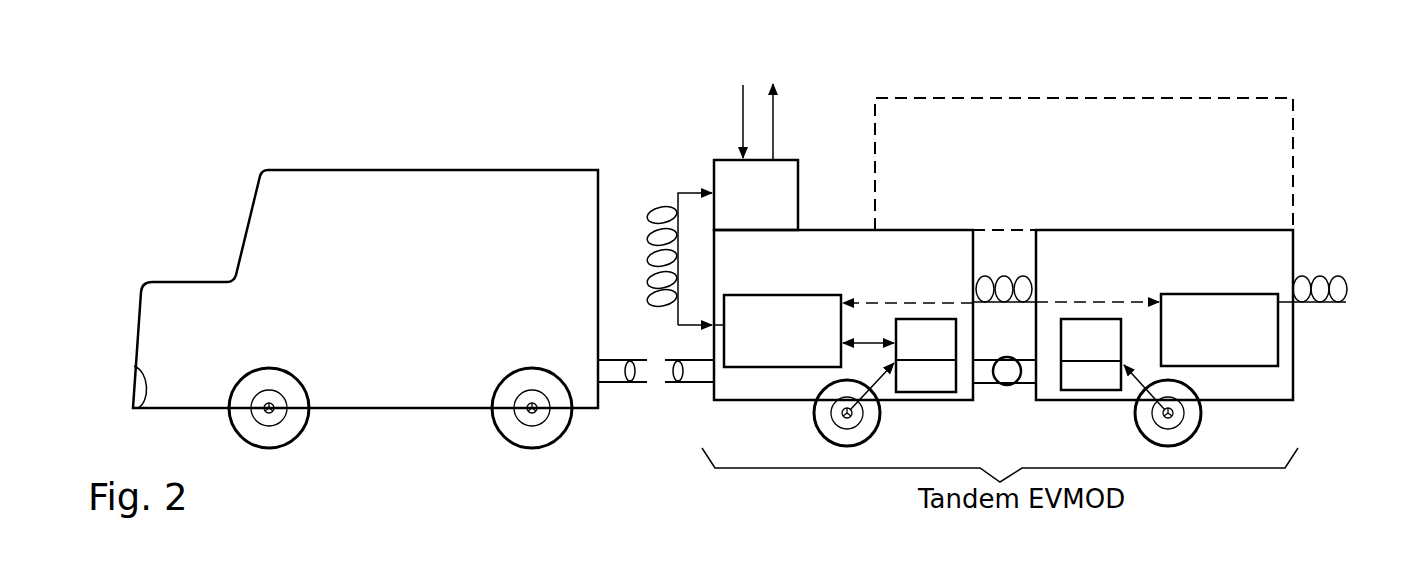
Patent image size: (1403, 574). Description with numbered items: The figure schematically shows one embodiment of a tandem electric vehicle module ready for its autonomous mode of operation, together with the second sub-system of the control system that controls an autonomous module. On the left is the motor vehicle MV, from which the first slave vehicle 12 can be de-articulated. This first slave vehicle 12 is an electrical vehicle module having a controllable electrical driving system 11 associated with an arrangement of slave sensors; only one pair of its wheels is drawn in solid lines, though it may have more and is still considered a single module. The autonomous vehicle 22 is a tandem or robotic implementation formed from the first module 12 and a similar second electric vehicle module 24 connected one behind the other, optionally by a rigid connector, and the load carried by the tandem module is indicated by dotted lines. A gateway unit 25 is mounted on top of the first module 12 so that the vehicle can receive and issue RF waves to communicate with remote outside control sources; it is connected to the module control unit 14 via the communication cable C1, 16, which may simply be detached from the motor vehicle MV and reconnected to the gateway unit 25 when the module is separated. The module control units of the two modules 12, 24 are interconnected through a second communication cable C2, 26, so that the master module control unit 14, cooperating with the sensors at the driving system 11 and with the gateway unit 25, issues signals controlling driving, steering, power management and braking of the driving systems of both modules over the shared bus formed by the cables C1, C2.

The electrical driving system 11 is at (927, 319).
The first slave vehicle 12 is at (913, 402).
The module control unit 14 is at (768, 295).
The communication cable 16 is at (665, 265).
The autonomous vehicle 22 is at (1273, 85).
The second electric vehicle module 24 is at (1058, 400).
The gateway unit 25 is at (798, 192).
The second communication cable 26 is at (1004, 288).
The motor vehicle MV is at (200, 280).
The communication cable C1 is at (627, 259).
The second communication cable C2 is at (999, 323).